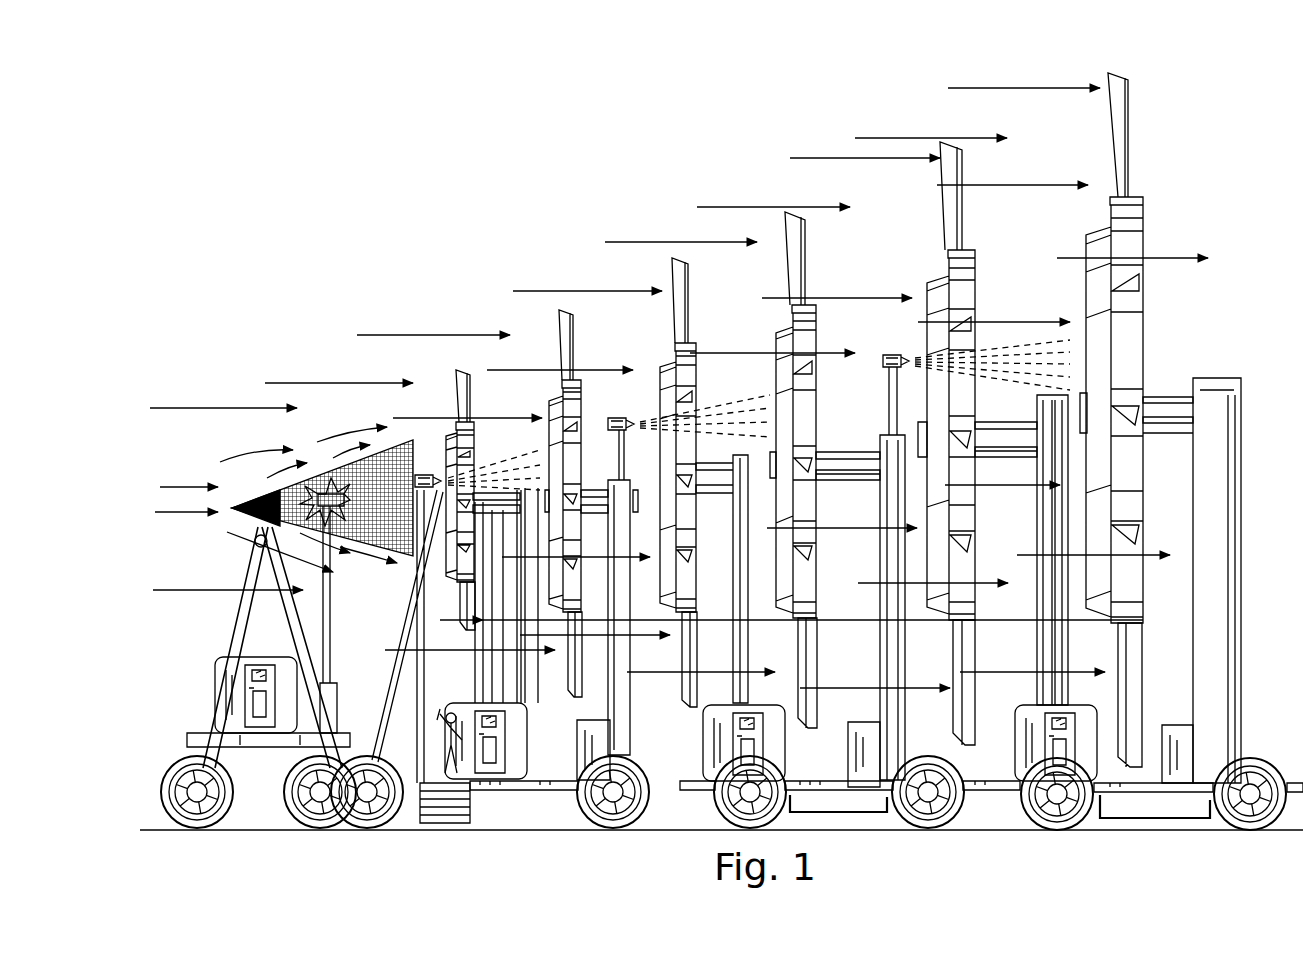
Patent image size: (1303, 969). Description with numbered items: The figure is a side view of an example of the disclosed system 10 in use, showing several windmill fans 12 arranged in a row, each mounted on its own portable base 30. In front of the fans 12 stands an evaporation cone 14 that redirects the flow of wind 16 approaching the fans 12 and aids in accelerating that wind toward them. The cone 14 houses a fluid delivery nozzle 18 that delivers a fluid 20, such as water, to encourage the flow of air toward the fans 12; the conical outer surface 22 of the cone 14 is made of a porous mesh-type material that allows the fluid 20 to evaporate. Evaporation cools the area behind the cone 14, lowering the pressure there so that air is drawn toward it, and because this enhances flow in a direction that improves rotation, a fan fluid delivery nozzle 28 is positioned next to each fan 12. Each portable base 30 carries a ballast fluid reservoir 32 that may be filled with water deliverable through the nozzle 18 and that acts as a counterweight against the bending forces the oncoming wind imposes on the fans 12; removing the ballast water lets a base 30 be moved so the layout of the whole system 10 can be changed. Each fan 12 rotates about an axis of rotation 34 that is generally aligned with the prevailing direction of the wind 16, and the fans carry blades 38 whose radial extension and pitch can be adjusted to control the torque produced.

The system 10 is at (220, 301).
The windmill fan 12 is at (477, 457).
The evaporation cone 14 is at (262, 496).
The wind 16 is at (425, 335).
The fluid delivery nozzle 18 is at (325, 478).
The fluid 20 is at (757, 393).
The conical outer surface 22 is at (245, 512).
The fan fluid delivery nozzle 28 is at (880, 368).
The portable base 30 is at (498, 795).
The ballast fluid reservoir 32 is at (850, 813).
The axis of rotation 34 is at (1222, 418).
The blade 38 is at (1130, 113).